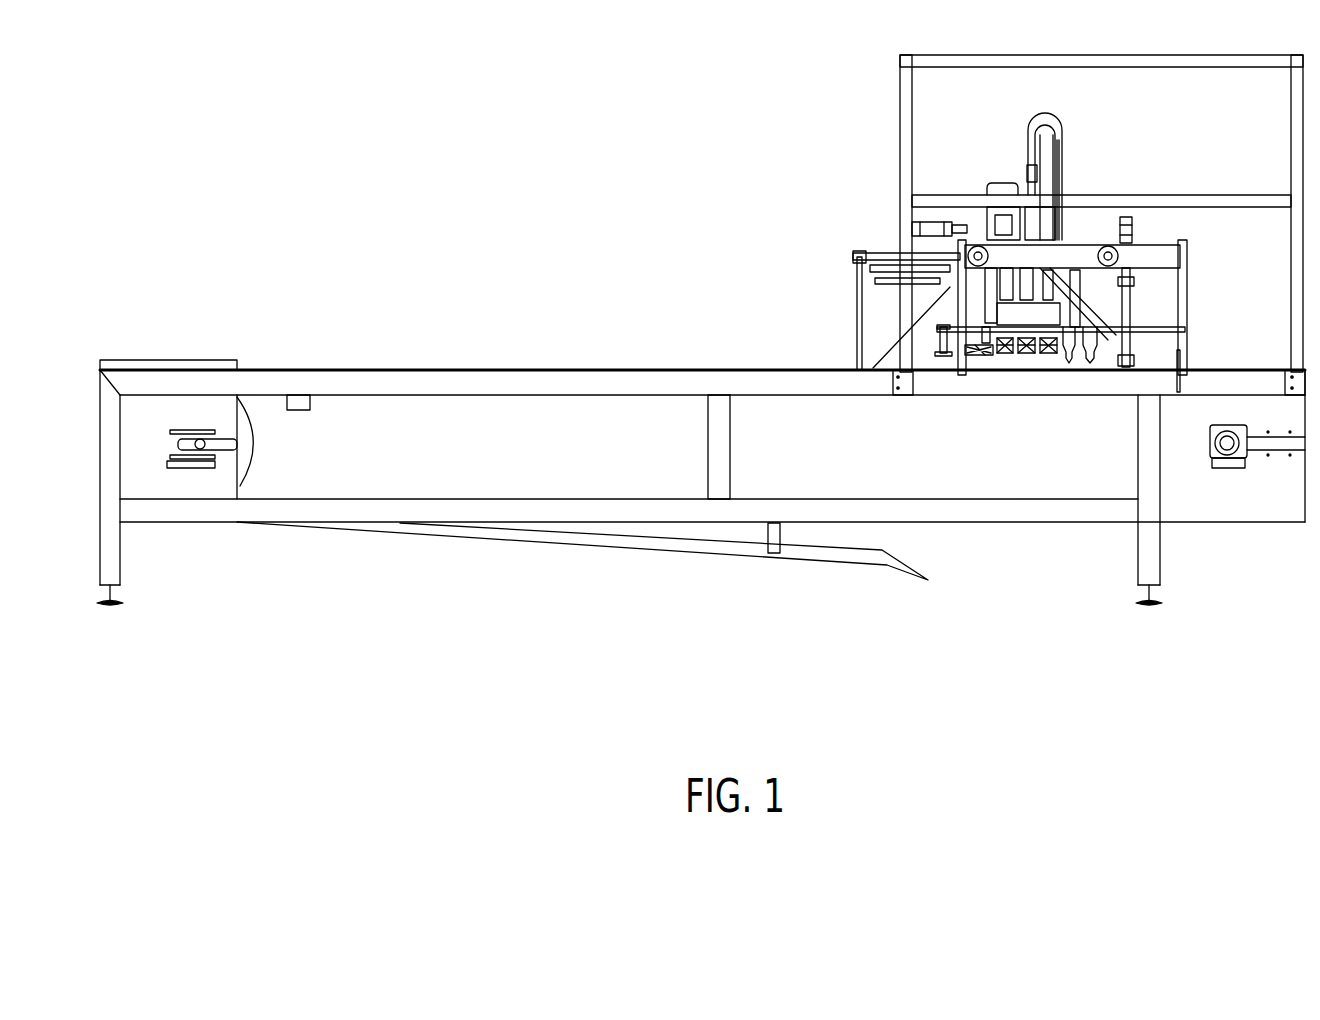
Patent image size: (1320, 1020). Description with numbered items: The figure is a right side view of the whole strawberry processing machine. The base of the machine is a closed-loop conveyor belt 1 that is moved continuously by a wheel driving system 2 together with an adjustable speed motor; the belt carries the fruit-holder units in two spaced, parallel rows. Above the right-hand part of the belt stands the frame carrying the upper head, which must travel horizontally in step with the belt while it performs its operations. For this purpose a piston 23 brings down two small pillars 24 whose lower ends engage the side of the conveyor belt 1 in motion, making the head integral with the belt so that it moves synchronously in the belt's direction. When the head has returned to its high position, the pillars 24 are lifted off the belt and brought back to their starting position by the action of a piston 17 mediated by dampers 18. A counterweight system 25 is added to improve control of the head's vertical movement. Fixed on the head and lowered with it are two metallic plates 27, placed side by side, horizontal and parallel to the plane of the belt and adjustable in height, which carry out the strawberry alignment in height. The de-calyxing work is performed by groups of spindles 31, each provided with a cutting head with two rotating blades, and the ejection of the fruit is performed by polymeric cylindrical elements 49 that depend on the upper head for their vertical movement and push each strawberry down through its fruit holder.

The conveyor belt 1 is at (347, 370).
The wheel driving system 2 is at (245, 470).
The piston 17 is at (865, 256).
The dampers 18 is at (910, 225).
The piston 23 is at (1135, 228).
The small pillars 24 is at (1132, 318).
The counterweight system 25 is at (1038, 217).
The metallic plates 27 is at (948, 356).
The spindles 31 is at (1000, 356).
The cylindrical elements 49 is at (1070, 345).